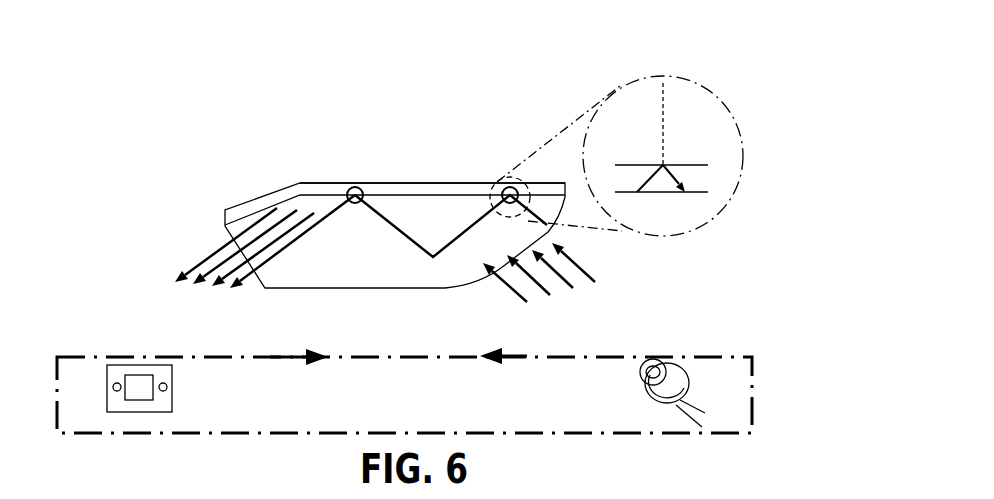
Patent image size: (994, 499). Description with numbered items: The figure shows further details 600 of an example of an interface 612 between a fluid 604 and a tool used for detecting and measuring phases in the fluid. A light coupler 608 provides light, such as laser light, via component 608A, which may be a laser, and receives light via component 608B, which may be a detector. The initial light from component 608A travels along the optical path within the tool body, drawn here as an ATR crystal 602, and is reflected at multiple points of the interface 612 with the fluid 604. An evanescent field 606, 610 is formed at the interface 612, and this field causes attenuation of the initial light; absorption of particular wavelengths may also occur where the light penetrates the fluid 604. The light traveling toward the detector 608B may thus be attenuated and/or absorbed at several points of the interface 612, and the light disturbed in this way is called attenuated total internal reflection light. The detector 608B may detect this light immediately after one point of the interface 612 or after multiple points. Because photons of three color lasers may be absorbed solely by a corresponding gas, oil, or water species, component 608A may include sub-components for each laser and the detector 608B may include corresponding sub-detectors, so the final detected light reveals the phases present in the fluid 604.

The further details 600 is at (779, 108).
The ATR crystal 602 is at (437, 215).
The fluid 604 is at (385, 182).
The evanescent field 606 is at (673, 77).
The light coupler 608 is at (745, 355).
The component (laser) 608A is at (693, 366).
The component (detector) 608B is at (107, 365).
The evanescent field 610 is at (508, 186).
The interface 612 is at (410, 193).